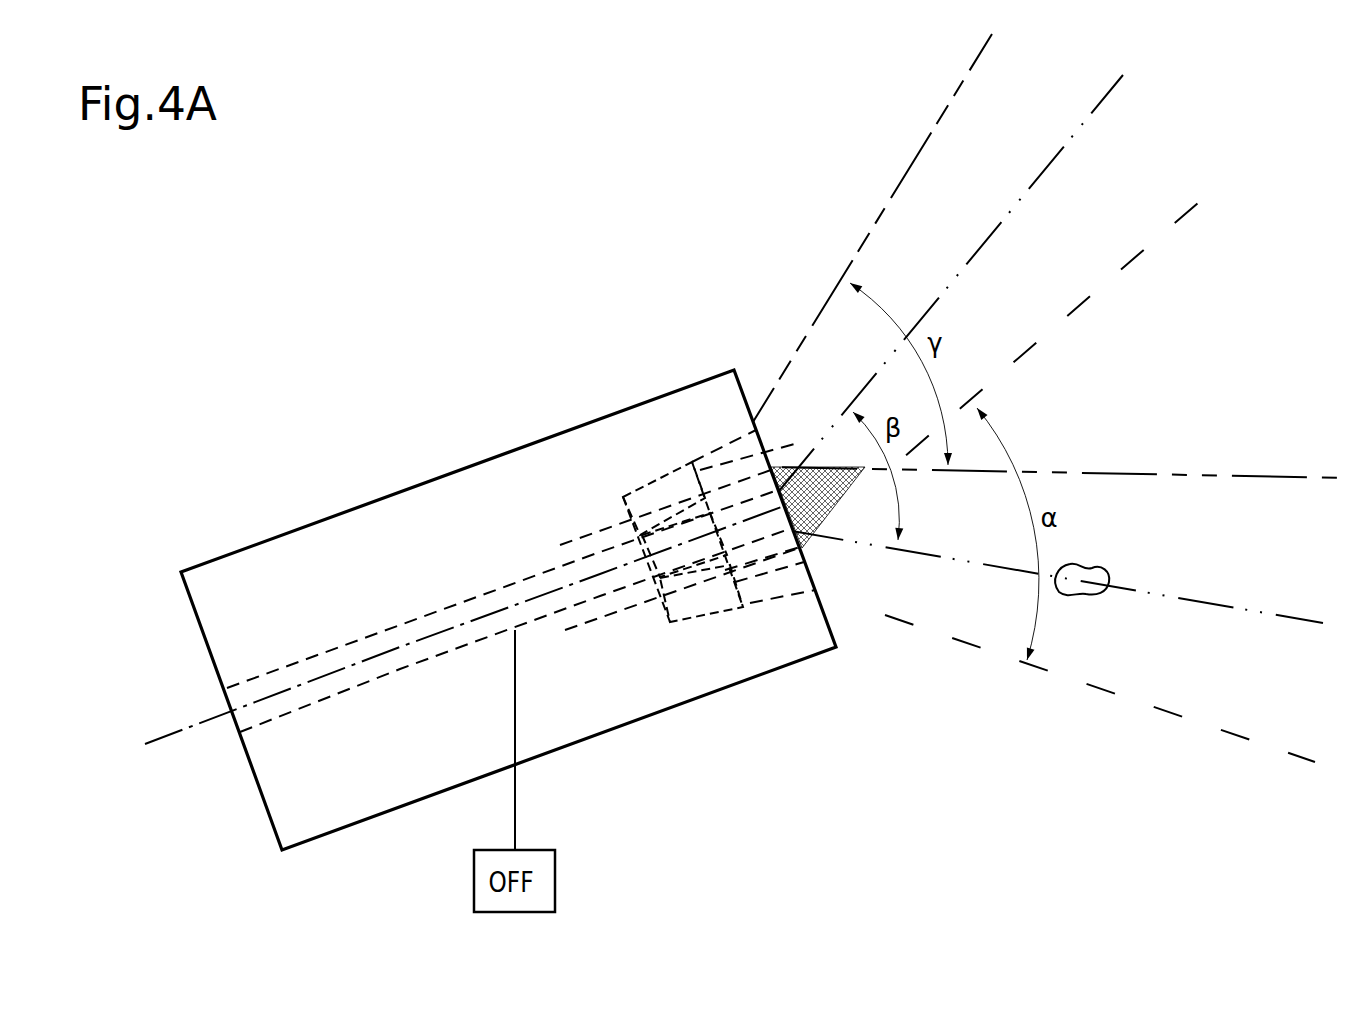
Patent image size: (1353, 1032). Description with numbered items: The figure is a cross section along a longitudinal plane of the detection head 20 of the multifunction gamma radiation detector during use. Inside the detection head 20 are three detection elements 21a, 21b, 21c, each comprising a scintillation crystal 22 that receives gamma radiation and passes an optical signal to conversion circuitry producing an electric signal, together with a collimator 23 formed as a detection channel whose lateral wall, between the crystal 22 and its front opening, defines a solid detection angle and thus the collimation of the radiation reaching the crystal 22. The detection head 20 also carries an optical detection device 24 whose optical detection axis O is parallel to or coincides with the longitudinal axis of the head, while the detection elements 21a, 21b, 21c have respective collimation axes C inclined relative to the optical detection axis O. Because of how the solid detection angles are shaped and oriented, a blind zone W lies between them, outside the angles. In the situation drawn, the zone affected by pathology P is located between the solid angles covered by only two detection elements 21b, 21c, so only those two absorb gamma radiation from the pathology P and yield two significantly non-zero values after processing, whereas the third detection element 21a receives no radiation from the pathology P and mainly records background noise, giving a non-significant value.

The detection head 20 is at (347, 488).
The detection element 21a is at (717, 430).
The detection element 21b is at (725, 617).
The detection element 21c is at (773, 547).
The scintillation crystal 22 is at (640, 492).
The collimator 23 is at (813, 650).
The optical detection device 24 is at (323, 647).
The optical detection axis O is at (167, 735).
The collimation axis C is at (583, 548).
The blind zone W is at (845, 492).
The zone affected by pathology P is at (1075, 592).